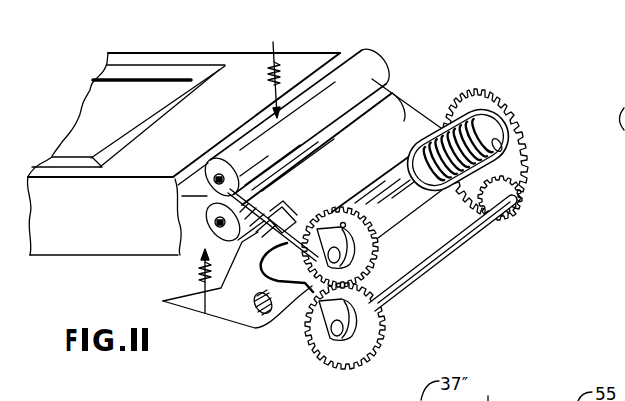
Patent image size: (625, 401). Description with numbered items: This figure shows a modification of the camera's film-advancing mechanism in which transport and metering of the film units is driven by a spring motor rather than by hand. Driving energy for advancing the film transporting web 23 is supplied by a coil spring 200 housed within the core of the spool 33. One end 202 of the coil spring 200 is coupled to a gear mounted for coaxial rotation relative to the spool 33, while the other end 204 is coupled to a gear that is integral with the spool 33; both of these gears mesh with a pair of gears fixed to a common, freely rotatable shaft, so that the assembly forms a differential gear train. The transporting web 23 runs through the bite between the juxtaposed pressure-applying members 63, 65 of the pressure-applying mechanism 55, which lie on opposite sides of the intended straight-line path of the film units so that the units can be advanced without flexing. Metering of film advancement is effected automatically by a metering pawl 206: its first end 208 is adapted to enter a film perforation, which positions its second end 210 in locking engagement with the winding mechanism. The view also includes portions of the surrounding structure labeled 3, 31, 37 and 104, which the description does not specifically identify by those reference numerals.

The support block 3 is at (125, 56).
The base member 31 is at (85, 240).
The plate 37 is at (205, 52).
The pressure-applying mechanism 55 is at (393, 82).
The pressure-applying member 63 is at (374, 63).
The pressure-applying member 65 is at (230, 230).
The film transporting web 23 is at (393, 110).
The coil spring 200 is at (413, 168).
The end of coil spring 204 is at (500, 145).
The spool 33 is at (500, 125).
The end of coil spring 202 is at (346, 224).
The first end of metering pawl 208 is at (283, 212).
The metering pawl 206 is at (187, 303).
The second end of metering pawl 210 is at (297, 290).
The feed element 104 is at (466, 5).